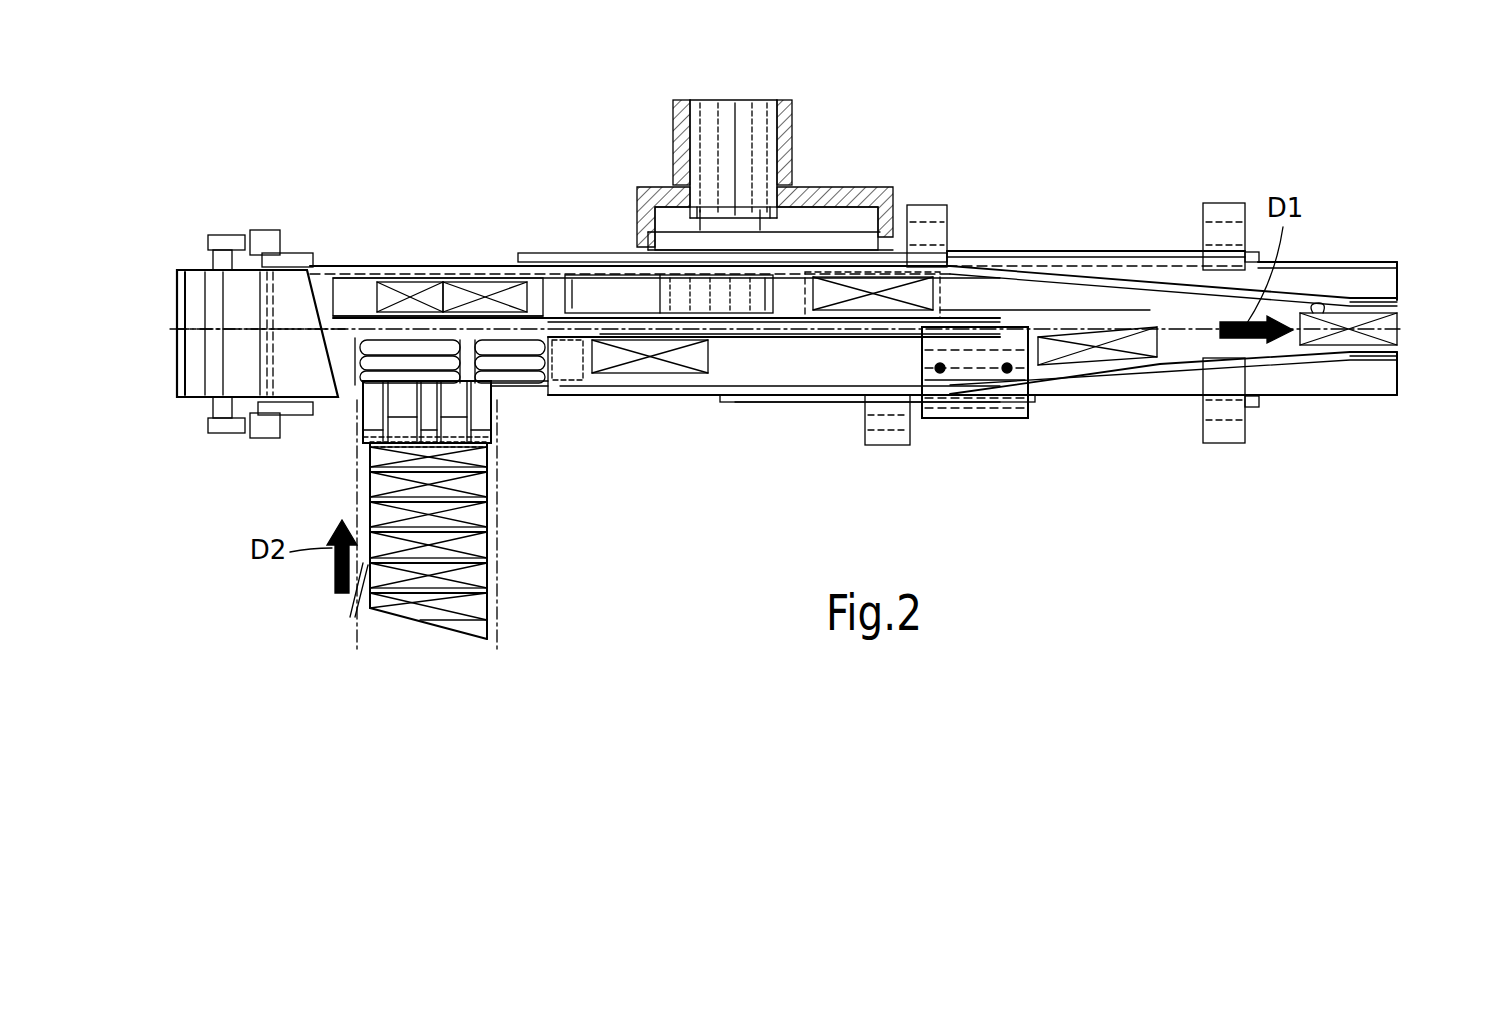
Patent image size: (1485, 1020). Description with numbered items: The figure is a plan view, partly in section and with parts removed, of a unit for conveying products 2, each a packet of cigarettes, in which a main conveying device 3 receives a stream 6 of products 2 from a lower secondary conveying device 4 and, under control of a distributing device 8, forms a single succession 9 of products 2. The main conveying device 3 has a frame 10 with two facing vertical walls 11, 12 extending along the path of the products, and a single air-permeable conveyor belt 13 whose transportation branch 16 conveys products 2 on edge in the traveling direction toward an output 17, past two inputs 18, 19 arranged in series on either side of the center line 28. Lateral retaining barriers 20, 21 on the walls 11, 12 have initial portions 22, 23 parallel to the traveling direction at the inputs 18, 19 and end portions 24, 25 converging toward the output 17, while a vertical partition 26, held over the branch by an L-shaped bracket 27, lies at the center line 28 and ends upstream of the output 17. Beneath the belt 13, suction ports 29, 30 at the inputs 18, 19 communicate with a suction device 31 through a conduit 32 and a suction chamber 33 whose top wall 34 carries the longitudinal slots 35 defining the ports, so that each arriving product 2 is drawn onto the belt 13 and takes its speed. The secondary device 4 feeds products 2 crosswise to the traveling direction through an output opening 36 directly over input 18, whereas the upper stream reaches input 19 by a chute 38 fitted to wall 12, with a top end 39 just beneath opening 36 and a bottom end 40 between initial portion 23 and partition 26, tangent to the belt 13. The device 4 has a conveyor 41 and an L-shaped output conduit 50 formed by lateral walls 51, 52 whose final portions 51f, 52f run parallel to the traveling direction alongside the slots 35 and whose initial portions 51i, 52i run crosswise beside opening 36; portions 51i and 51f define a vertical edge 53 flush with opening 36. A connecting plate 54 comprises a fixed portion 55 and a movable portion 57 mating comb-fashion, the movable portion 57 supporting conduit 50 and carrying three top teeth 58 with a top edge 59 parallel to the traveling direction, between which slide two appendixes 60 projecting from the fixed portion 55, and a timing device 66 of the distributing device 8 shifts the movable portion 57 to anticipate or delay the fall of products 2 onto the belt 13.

The products 2 is at (670, 368).
The main conveying device 3 is at (1427, 298).
The secondary conveying device 4 is at (420, 627).
The stream 6 is at (447, 628).
The distributing device 8 is at (285, 467).
The succession 9 is at (1402, 335).
The frame 10 is at (1366, 266).
The vertical wall 11 is at (1293, 396).
The vertical wall 12 is at (1297, 263).
The conveyor belt 13 is at (1405, 283).
The transportation branch 16 is at (1317, 282).
The output 17 is at (1313, 313).
The input 18 is at (600, 372).
The input 19 is at (947, 295).
The lateral retaining barrier 20 is at (780, 403).
The lateral retaining barrier 21 is at (997, 262).
The initial portion 22 is at (717, 402).
The initial portion 23 is at (850, 263).
The end portion 24 is at (1095, 367).
The end portion 25 is at (1043, 276).
The vertical partition 26 is at (847, 322).
The L-shaped bracket 27 is at (977, 407).
The center line 28 is at (1407, 327).
The suction port 29 is at (493, 323).
The suction port 30 is at (797, 262).
The suction device 31 is at (683, 103).
The conduit 32 is at (690, 142).
The suction chamber 33 is at (757, 215).
The top wall 34 is at (660, 250).
The longitudinal slots 35 is at (427, 377).
The output opening 36 is at (427, 393).
The chute 38 is at (592, 287).
The top end 39 is at (388, 335).
The bottom end 40 is at (760, 297).
The conveyor 41 is at (352, 597).
The output conduit 50 is at (455, 452).
The lateral wall 51 is at (513, 385).
The final portion 51f is at (498, 387).
The initial portion 51i is at (520, 390).
The lateral wall 52 is at (358, 392).
The final portion 52f is at (390, 362).
The initial portion 52i is at (360, 457).
The vertical edge 53 is at (527, 388).
The connecting plate 54 is at (360, 462).
The fixed portion 55 is at (452, 452).
The movable portion 57 is at (360, 393).
The top teeth 58 is at (395, 378).
The top edge 59 is at (360, 360).
The appendixes 60 is at (372, 567).
The timing device 66 is at (307, 423).